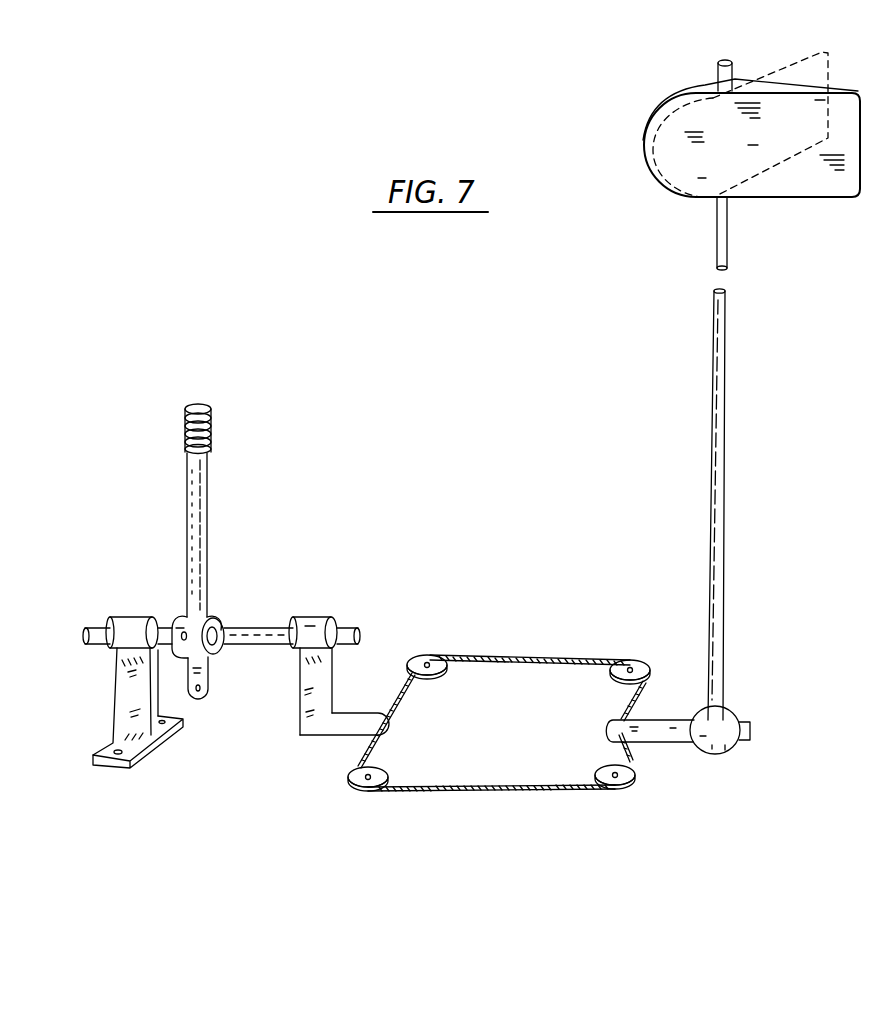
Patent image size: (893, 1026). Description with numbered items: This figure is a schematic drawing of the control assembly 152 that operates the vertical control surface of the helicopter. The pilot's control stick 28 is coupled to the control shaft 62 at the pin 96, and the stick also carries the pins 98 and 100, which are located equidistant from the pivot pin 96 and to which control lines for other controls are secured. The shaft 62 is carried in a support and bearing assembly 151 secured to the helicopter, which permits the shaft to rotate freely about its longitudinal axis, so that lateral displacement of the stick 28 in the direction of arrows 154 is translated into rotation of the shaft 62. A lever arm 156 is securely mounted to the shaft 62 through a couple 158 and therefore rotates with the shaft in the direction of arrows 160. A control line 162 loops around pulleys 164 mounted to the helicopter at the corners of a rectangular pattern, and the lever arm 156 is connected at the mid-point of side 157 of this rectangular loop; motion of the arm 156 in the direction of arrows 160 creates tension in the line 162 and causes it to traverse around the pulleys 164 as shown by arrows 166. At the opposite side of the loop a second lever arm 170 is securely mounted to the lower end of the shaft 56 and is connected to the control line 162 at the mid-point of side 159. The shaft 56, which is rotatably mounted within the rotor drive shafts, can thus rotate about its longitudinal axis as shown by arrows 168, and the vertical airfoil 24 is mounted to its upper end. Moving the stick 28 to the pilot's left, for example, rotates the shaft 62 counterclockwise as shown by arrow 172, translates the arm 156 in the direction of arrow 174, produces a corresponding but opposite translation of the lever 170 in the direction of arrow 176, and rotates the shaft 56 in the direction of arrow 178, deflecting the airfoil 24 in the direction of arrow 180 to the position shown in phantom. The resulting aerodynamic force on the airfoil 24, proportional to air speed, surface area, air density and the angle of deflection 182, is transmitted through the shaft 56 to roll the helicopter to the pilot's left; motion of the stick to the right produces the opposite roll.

The vertical airfoil 24 is at (838, 190).
The control stick 28 is at (210, 427).
The shaft 56 is at (727, 470).
The control shaft 62 is at (233, 628).
The pin 96 is at (187, 622).
The pin 98 is at (197, 530).
The pin 100 is at (198, 698).
The support and bearing assembly 151 is at (100, 595).
The control assembly 152 is at (375, 600).
The arrows 154 is at (245, 353).
The lever arm 156 is at (350, 733).
The side 157 is at (407, 683).
The couple 158 is at (313, 617).
The side 159 is at (641, 688).
The arrows 160 is at (380, 753).
The control line 162 is at (550, 663).
The pulleys 164 is at (437, 656).
The arrows 166 is at (545, 632).
The arrows 168 is at (752, 665).
The lever arm 170 is at (620, 720).
The arrow 172 is at (273, 608).
The arrow 174 is at (345, 690).
The arrow 176 is at (598, 762).
The arrow 178 is at (770, 560).
The arrow 180 is at (870, 77).
The angle of deflection 182 is at (752, 180).